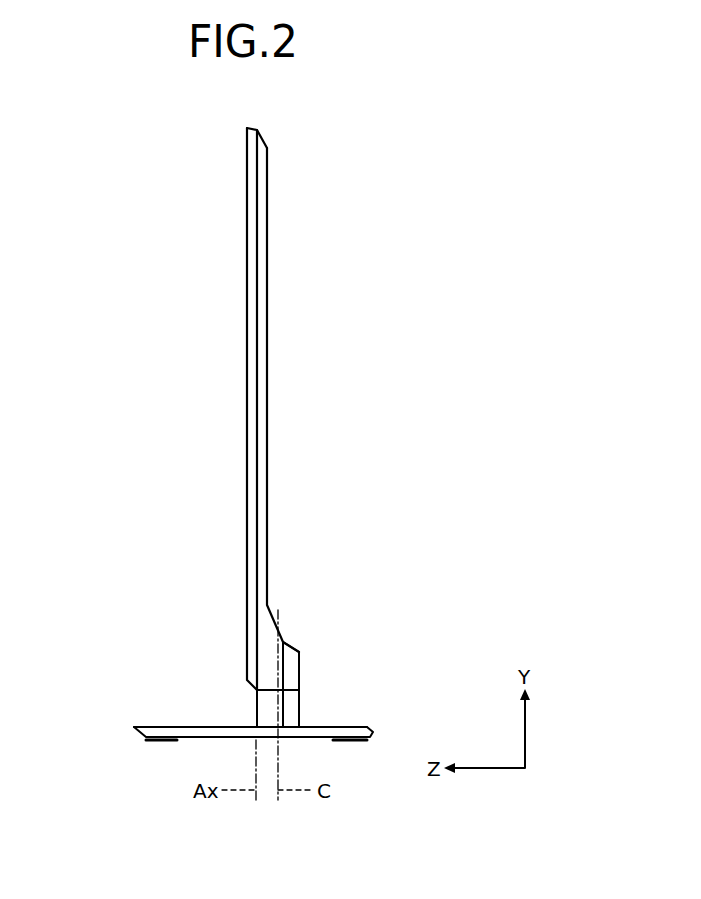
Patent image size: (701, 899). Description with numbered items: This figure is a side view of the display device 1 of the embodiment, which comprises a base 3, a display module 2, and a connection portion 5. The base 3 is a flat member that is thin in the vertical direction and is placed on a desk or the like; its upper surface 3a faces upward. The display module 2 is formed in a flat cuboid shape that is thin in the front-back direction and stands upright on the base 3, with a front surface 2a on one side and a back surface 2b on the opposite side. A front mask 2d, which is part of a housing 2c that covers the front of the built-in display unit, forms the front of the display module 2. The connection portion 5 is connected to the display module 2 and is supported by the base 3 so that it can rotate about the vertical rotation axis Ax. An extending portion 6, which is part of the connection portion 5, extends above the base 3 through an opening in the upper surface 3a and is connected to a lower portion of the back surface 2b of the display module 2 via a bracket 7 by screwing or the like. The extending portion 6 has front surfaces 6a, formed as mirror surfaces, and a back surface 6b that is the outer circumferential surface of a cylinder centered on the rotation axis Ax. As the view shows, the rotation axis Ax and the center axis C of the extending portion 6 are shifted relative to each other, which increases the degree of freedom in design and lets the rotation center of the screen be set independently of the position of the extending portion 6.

The display device 1 is at (334, 136).
The display module 2 is at (240, 204).
The front surface 2a is at (246, 153).
The back surface 2b is at (267, 168).
The housing 2c is at (282, 113).
The front mask 2d is at (247, 128).
The base 3 is at (189, 746).
The upper surface 3a is at (170, 727).
The connection portion 5 is at (303, 684).
The extending portion 6 is at (306, 703).
The front surface 6a is at (262, 708).
The back surface 6b is at (292, 718).
The bracket 7 is at (292, 658).